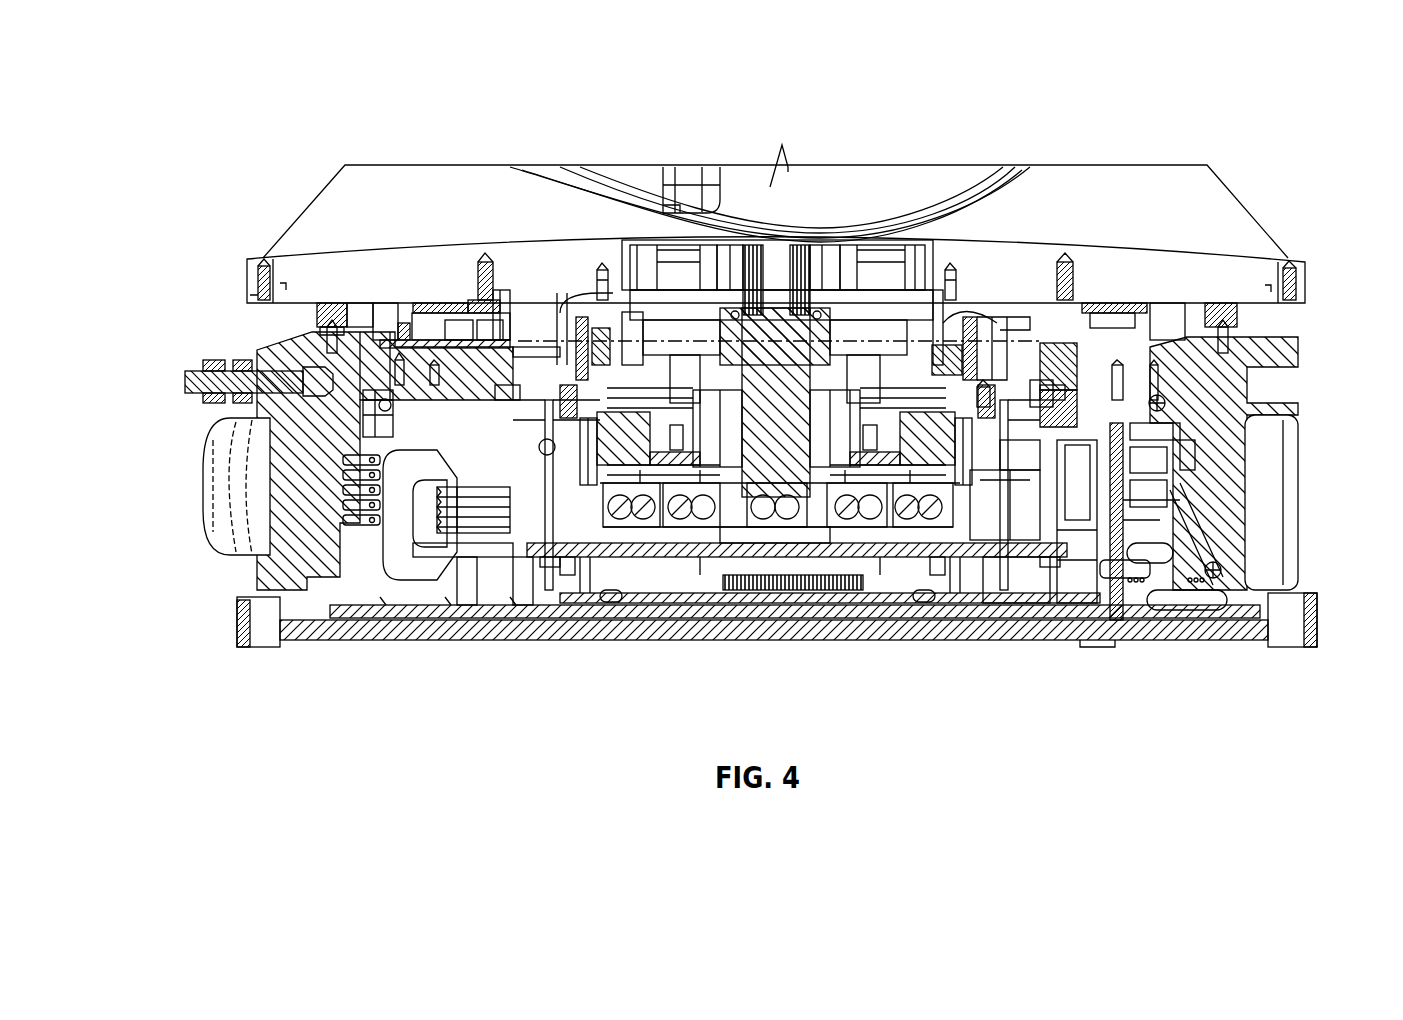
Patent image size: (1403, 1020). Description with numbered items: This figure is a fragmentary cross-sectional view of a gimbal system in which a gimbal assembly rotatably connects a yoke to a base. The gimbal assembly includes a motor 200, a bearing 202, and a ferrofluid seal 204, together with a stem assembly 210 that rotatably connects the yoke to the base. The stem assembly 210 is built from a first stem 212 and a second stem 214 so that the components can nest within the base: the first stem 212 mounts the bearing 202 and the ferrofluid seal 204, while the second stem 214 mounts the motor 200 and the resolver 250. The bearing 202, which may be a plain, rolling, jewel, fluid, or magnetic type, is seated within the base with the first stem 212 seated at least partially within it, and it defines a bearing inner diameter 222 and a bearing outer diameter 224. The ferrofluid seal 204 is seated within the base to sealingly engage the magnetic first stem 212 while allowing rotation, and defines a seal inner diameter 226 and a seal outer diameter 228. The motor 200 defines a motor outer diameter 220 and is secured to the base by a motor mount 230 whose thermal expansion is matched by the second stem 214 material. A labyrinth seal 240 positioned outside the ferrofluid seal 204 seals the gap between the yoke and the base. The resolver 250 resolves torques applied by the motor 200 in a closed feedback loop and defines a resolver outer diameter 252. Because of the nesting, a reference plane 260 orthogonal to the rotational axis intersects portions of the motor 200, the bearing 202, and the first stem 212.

The motor 200 is at (603, 332).
The bearing 202 is at (503, 390).
The ferrofluid seal 204 is at (387, 320).
The stem assembly 210 is at (877, 313).
The first stem 212 is at (453, 300).
The second stem 214 is at (640, 307).
The motor outer diameter 220 is at (998, 407).
The bearing inner diameter 222 is at (537, 340).
The bearing outer diameter 224 is at (480, 365).
The seal inner diameter 226 is at (427, 307).
The seal outer diameter 228 is at (370, 320).
The motor mount 230 is at (1043, 427).
The labyrinth seal 240 is at (318, 300).
The resolver 250 is at (633, 460).
The resolver outer diameter 252 is at (585, 440).
The reference plane 260 is at (1213, 373).